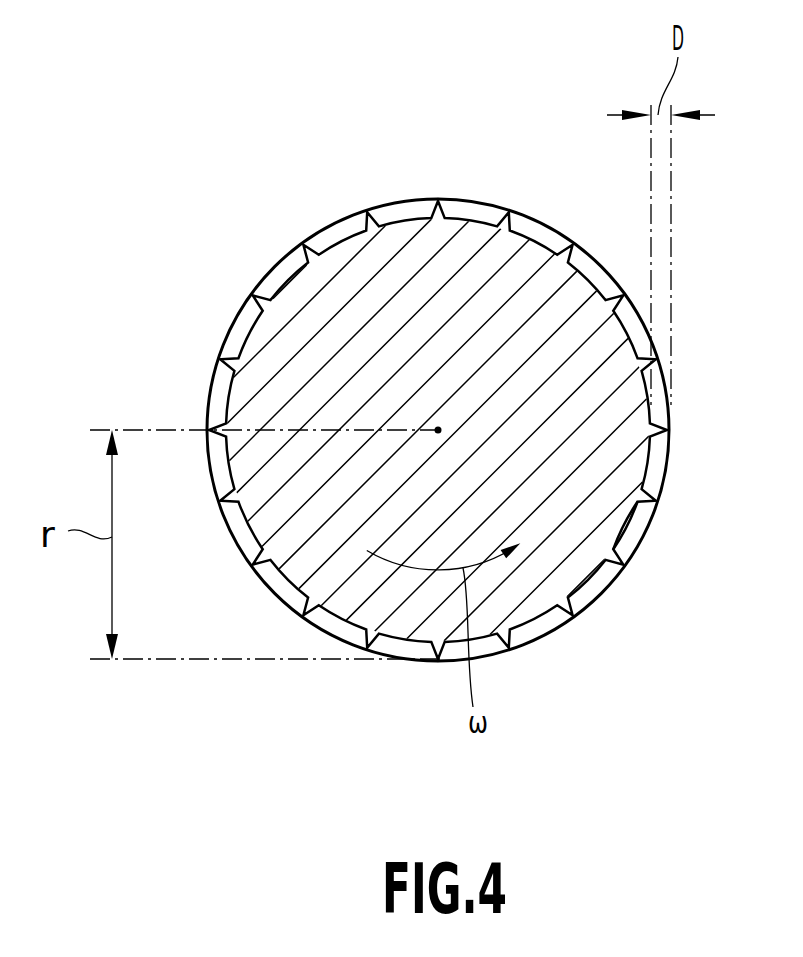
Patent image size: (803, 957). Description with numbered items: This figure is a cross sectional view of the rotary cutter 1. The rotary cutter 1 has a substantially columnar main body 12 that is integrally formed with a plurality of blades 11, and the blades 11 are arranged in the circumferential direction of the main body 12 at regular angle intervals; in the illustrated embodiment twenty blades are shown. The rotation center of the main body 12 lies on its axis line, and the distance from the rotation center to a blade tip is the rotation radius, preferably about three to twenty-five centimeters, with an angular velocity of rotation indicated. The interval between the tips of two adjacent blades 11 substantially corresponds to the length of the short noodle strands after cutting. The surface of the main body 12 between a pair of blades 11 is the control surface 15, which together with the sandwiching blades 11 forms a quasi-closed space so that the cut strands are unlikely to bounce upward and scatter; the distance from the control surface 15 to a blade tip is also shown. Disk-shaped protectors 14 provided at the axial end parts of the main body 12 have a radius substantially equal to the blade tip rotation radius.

The rotary cutter 1 is at (518, 162).
The blades 11 is at (635, 557).
The main body 12 is at (347, 363).
The protector 14 is at (338, 233).
The control surface 15 is at (633, 523).